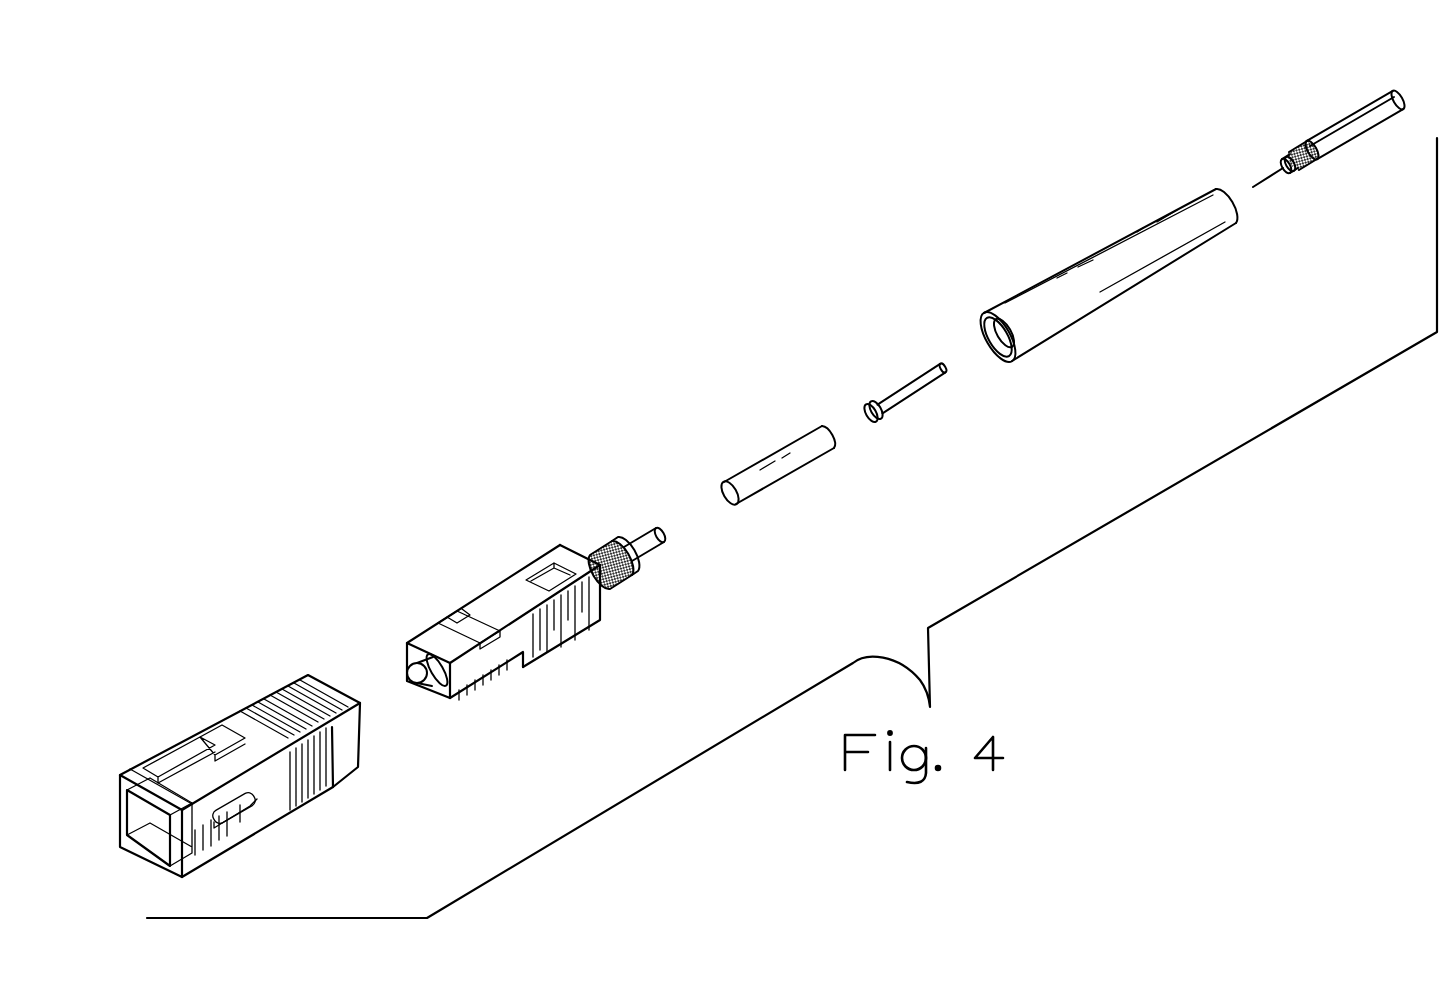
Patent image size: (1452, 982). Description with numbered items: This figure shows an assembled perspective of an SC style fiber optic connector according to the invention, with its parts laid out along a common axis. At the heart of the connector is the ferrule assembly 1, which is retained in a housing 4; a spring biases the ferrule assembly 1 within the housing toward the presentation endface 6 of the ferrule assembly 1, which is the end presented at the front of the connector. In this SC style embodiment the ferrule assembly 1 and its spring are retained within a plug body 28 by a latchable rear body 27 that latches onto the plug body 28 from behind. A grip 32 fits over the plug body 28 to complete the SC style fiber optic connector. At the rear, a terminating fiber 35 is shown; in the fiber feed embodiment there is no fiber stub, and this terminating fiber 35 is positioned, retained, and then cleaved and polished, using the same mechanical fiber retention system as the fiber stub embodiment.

The ferrule assembly 1 is at (430, 690).
The housing 4 is at (510, 590).
The presentation endface 6 is at (417, 683).
The latchable rear body 27 is at (612, 553).
The plug body 28 is at (583, 613).
The grip 32 is at (200, 737).
The terminating fiber 35 is at (1262, 175).